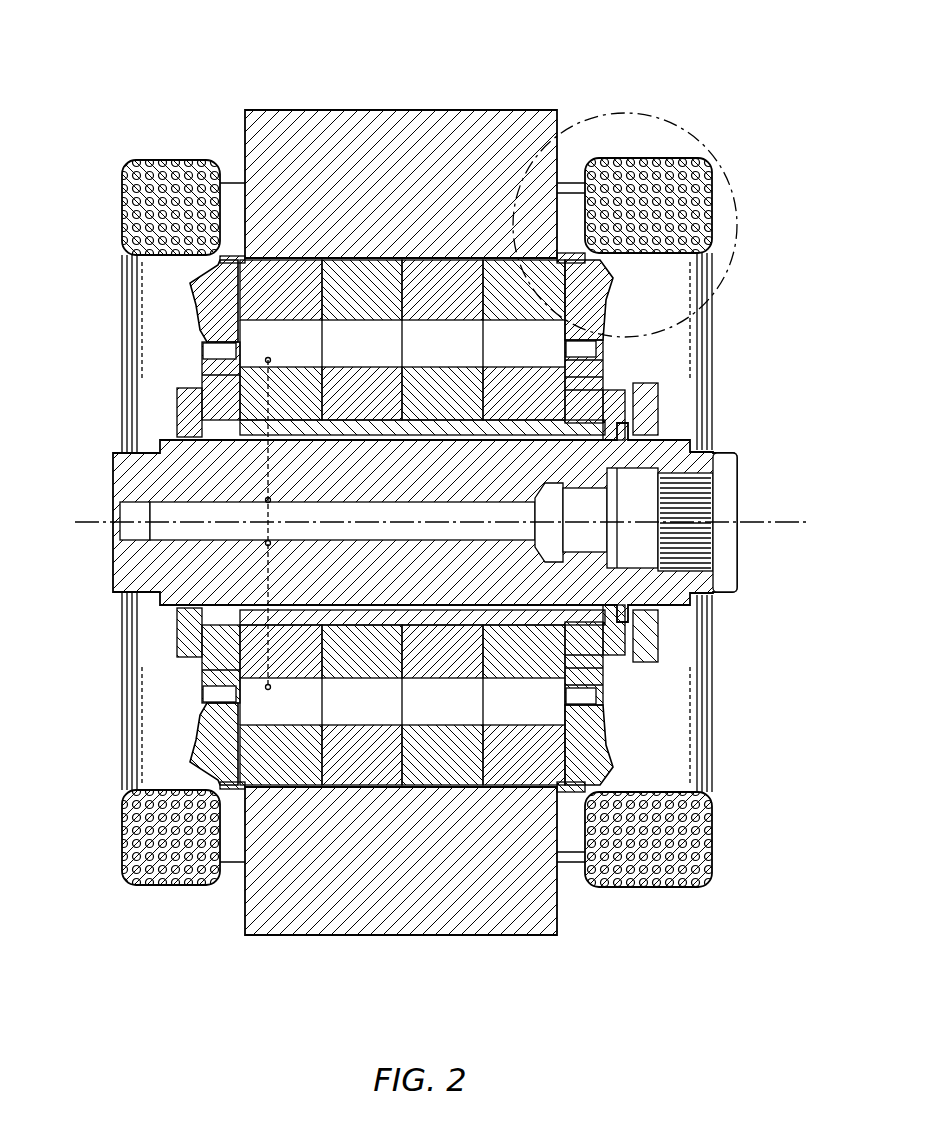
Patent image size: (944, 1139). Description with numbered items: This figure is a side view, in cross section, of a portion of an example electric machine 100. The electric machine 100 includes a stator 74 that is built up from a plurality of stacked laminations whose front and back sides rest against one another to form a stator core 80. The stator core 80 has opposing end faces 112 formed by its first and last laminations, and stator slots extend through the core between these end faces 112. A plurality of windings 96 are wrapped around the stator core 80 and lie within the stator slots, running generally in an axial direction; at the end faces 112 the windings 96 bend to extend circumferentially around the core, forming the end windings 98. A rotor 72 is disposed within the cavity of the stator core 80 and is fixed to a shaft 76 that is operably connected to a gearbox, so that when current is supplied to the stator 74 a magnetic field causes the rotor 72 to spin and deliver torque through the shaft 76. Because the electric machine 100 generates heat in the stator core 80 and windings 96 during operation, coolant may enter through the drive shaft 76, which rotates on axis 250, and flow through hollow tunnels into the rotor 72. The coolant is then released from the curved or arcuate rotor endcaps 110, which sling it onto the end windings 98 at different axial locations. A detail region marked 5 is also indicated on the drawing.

The electric machine 100 is at (200, 70).
The stator 74 is at (323, 110).
The stator core 80 is at (434, 110).
The rotor 72 is at (512, 288).
The end faces 112 is at (245, 148).
The end windings 98 is at (716, 172).
The windings 96 is at (237, 850).
The rotor endcaps 110 is at (205, 300).
The shaft 76 is at (722, 452).
The axis 250 is at (790, 521).
The detail view circle 5 is at (740, 232).